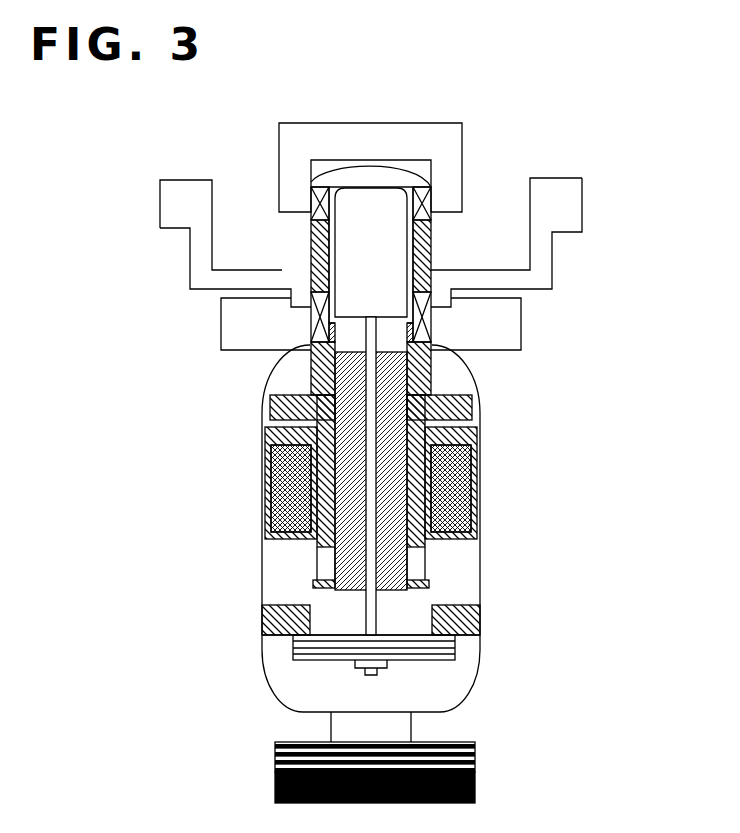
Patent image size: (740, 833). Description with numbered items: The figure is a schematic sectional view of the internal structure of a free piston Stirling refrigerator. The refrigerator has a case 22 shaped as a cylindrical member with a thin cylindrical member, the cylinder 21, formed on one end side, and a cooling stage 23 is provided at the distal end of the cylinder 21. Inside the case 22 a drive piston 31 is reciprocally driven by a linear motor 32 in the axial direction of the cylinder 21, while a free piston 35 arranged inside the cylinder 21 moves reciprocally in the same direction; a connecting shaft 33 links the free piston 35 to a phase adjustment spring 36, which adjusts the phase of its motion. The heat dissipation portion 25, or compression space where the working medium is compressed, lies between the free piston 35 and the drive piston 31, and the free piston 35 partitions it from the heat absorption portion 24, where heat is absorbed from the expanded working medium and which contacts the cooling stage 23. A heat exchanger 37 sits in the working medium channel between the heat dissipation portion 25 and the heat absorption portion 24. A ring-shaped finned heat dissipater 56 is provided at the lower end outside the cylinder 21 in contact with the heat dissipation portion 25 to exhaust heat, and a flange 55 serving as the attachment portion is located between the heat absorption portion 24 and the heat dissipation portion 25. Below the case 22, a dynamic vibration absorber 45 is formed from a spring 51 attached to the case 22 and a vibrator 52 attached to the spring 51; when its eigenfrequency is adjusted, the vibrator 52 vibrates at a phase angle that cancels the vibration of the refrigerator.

The cylinder 21 is at (430, 237).
The case 22 is at (480, 575).
The cooling stage 23 is at (450, 142).
The heat absorption portion 24 is at (372, 178).
The heat dissipation portion 25 is at (345, 338).
The drive piston 31 is at (472, 400).
The linear motor 32 is at (457, 467).
The connecting shaft 33 is at (376, 617).
The free piston 35 is at (380, 207).
The phase adjustment spring 36 is at (453, 655).
The heat exchanger 37 is at (430, 280).
The dynamic vibration absorber 45 is at (478, 759).
The spring 51 is at (475, 755).
The vibrator 52 is at (475, 790).
The flange 55 is at (178, 188).
The heat dissipater 56 is at (232, 318).